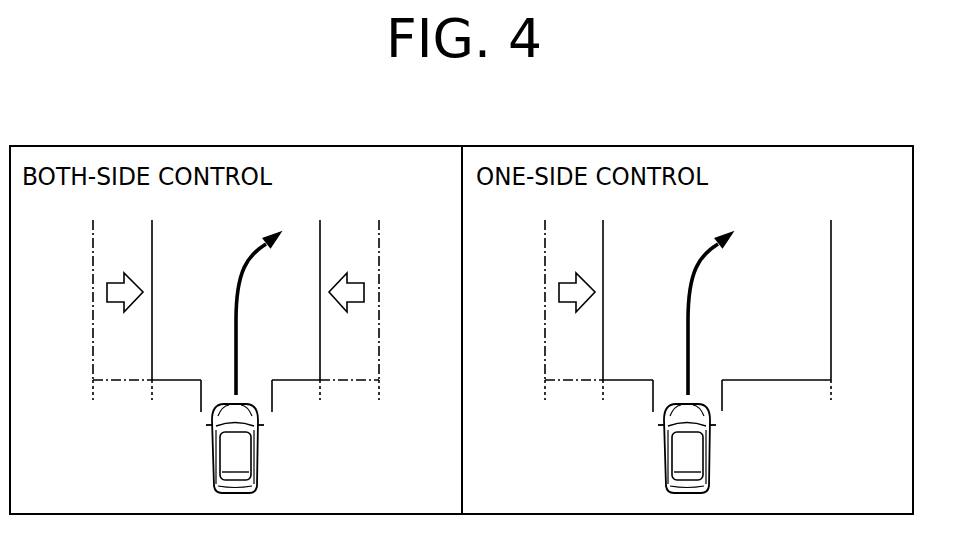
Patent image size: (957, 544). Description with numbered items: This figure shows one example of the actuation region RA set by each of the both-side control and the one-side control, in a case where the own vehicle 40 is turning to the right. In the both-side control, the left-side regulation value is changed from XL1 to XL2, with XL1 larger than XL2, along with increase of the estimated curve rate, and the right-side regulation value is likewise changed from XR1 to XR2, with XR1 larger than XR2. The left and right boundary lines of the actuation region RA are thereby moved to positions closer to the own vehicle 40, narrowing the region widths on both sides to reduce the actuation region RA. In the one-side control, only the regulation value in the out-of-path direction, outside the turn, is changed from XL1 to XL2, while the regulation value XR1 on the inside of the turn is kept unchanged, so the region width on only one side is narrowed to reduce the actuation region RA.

The own vehicle 40 is at (259, 476).
The actuation region RA is at (162, 236).
The left-side regulation value (initial) XL1 is at (335, 324).
The left-side regulation value (reduced) XL2 is at (375, 324).
The right-side regulation value (initial) XR1 is at (587, 324).
The right-side regulation value (reduced) XR2 is at (313, 324).